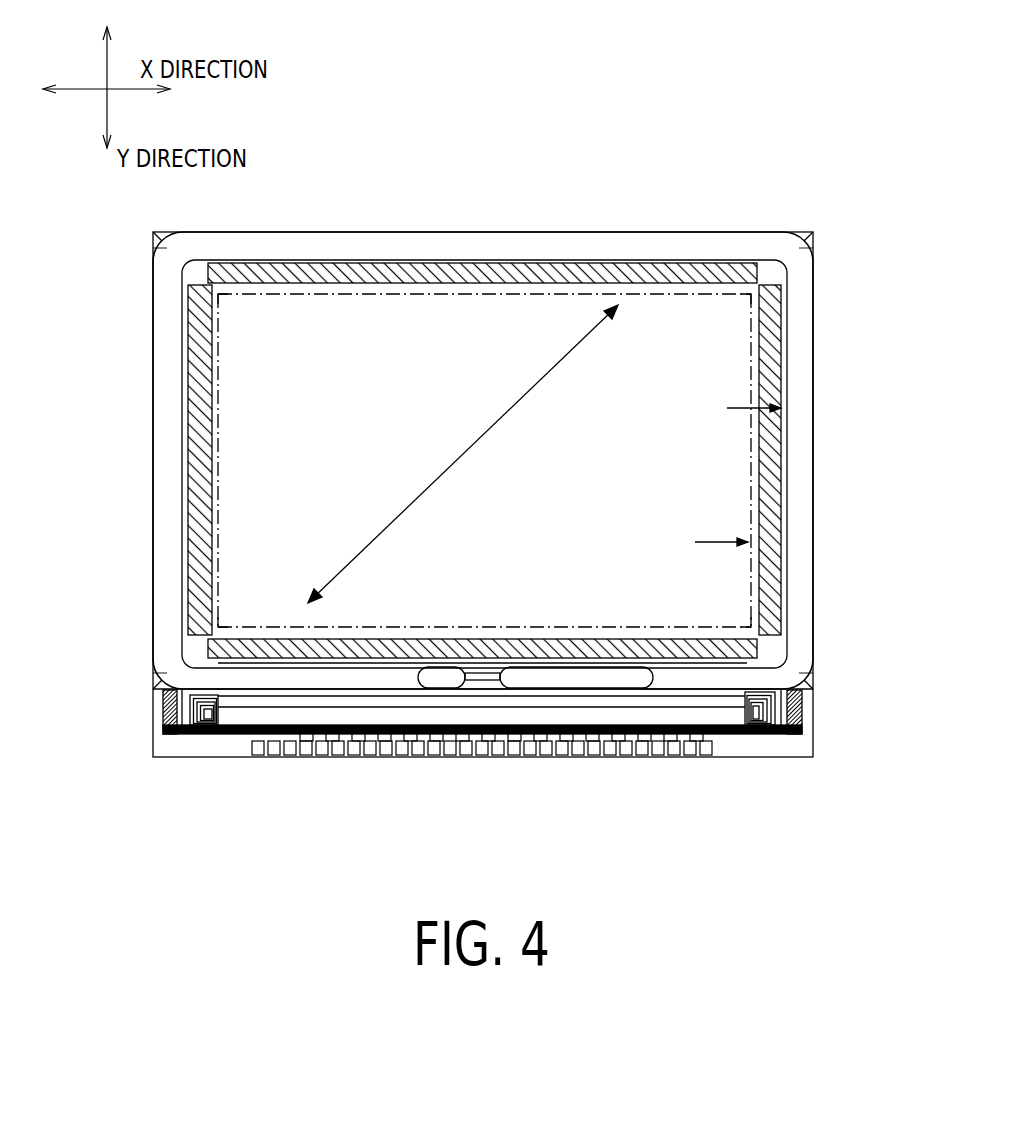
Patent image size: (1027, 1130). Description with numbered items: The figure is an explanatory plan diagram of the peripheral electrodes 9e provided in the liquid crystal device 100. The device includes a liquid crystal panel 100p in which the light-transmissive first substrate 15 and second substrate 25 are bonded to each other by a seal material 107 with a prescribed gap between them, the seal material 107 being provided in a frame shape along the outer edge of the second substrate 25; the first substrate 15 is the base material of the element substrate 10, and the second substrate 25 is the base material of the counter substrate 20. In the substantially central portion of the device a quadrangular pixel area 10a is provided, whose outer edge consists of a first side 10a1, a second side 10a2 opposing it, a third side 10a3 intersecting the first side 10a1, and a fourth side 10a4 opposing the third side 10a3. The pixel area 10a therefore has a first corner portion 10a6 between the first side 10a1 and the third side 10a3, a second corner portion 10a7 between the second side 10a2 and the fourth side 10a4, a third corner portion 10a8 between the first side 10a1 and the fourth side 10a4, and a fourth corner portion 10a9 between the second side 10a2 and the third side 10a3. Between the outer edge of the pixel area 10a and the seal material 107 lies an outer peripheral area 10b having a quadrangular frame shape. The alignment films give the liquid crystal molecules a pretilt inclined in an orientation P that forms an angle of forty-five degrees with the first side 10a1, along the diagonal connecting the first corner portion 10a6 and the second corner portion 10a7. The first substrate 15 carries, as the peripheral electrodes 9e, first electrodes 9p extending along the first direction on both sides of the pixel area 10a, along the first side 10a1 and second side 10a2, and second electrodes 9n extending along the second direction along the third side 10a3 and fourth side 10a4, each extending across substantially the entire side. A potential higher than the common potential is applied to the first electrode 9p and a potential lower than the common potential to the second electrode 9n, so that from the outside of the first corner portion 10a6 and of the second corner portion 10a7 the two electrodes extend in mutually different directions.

The liquid crystal device 100 is at (783, 102).
The liquid crystal panel 100p is at (723, 209).
The seal material 107 is at (815, 407).
The element substrate 10 is at (213, 757).
The first substrate 15 is at (483, 494).
The outer peripheral area 10b is at (790, 542).
The pixel area 10a is at (565, 466).
The first side 10a1 is at (383, 295).
The second side 10a2 is at (533, 627).
The third side 10a3 is at (750, 487).
The fourth side 10a4 is at (218, 433).
The first corner portion 10a6 is at (749, 294).
The second corner portion 10a7 is at (219, 626).
The third corner portion 10a8 is at (219, 296).
The fourth corner portion 10a9 is at (750, 623).
The peripheral electrodes 9e is at (410, 272).
The first electrode 9p is at (412, 652).
The second electrode 9n is at (197, 423).
The counter substrate 20 is at (322, 690).
The second substrate 25 is at (482, 711).
The orientation P is at (463, 454).